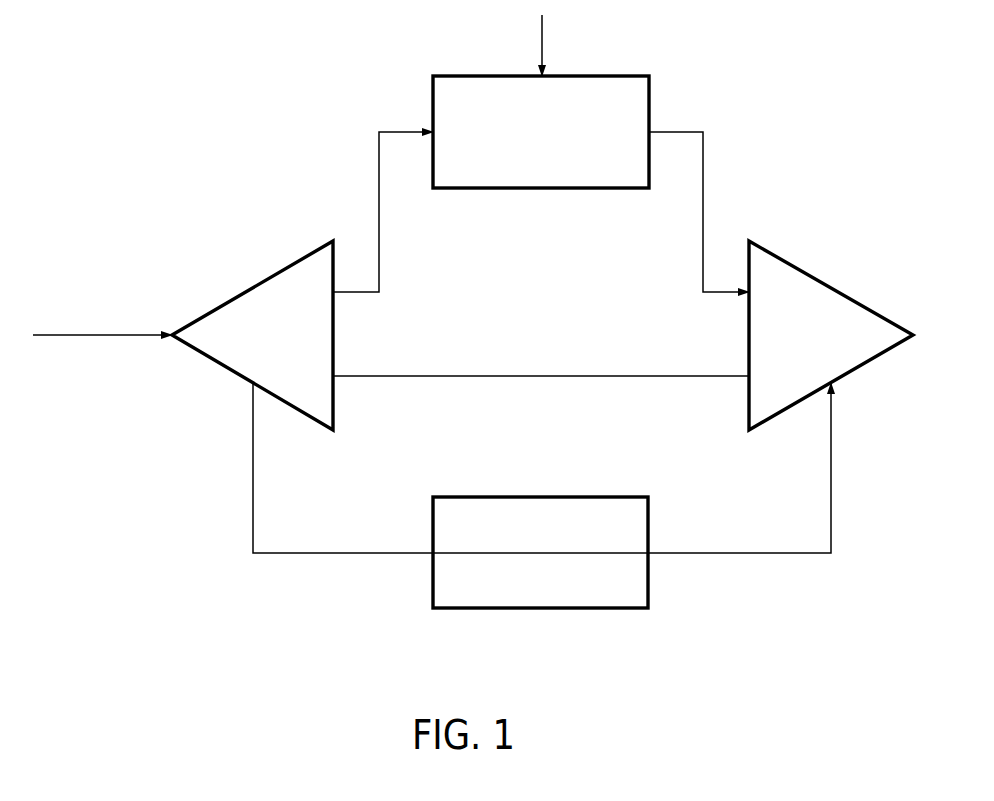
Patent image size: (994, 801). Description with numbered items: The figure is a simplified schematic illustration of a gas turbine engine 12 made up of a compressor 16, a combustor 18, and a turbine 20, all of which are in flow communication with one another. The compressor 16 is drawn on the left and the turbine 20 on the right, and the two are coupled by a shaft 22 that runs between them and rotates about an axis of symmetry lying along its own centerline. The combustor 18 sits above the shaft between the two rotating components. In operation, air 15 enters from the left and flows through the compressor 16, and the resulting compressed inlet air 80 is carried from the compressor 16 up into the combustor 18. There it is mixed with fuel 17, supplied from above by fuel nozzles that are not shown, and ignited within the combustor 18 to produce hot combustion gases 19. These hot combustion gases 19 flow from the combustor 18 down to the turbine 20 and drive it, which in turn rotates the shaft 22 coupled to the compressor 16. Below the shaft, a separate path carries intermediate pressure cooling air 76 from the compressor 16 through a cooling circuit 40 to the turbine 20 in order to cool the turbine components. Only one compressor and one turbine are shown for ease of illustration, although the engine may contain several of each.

The gas turbine engine 12 is at (178, 128).
The air 15 is at (97, 334).
The compressor 16 is at (262, 283).
The fuel 17 is at (542, 33).
The combustor 18 is at (650, 96).
The hot combustion gases 19 is at (703, 160).
The turbine 20 is at (822, 281).
The shaft 22 is at (568, 376).
The cooling circuit 40 is at (537, 497).
The intermediate pressure cooling air 76 is at (545, 553).
The compressed inlet air 80 is at (379, 162).